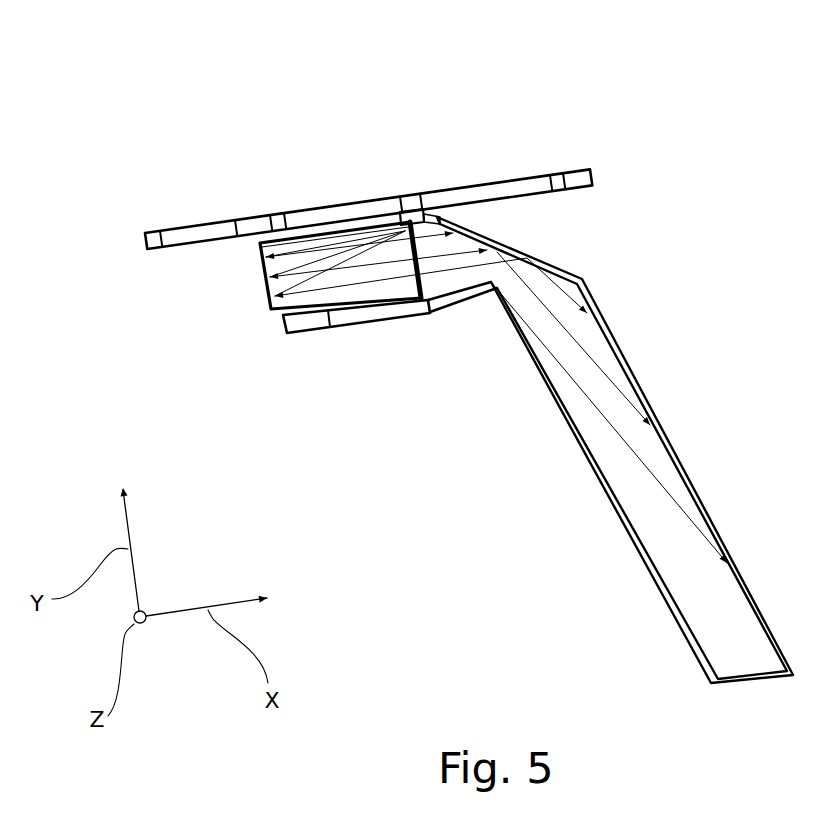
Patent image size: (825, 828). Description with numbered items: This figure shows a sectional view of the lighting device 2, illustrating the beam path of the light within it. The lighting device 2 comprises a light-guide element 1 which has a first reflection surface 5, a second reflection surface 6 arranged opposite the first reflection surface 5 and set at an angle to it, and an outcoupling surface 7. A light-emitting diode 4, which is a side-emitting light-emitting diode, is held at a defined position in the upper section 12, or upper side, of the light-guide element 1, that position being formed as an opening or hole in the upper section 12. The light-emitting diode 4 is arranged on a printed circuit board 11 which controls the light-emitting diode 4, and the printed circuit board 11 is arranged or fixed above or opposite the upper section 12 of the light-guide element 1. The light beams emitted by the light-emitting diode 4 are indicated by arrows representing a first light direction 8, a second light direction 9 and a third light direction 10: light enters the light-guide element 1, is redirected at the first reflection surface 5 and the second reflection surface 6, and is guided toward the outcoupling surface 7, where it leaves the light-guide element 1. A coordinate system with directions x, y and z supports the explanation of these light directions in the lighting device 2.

The light-guide element 1 is at (592, 276).
The lighting device 2 is at (620, 97).
The light-emitting diode 4 is at (404, 212).
The first reflection surface 5 is at (263, 272).
The second reflection surface 6 is at (533, 251).
The outcoupling surface 7 is at (645, 380).
The first light direction 8 is at (310, 250).
The second light direction 9 is at (450, 274).
The third light direction 10 is at (604, 414).
The printed circuit board 11 is at (456, 188).
The upper section 12 is at (354, 222).